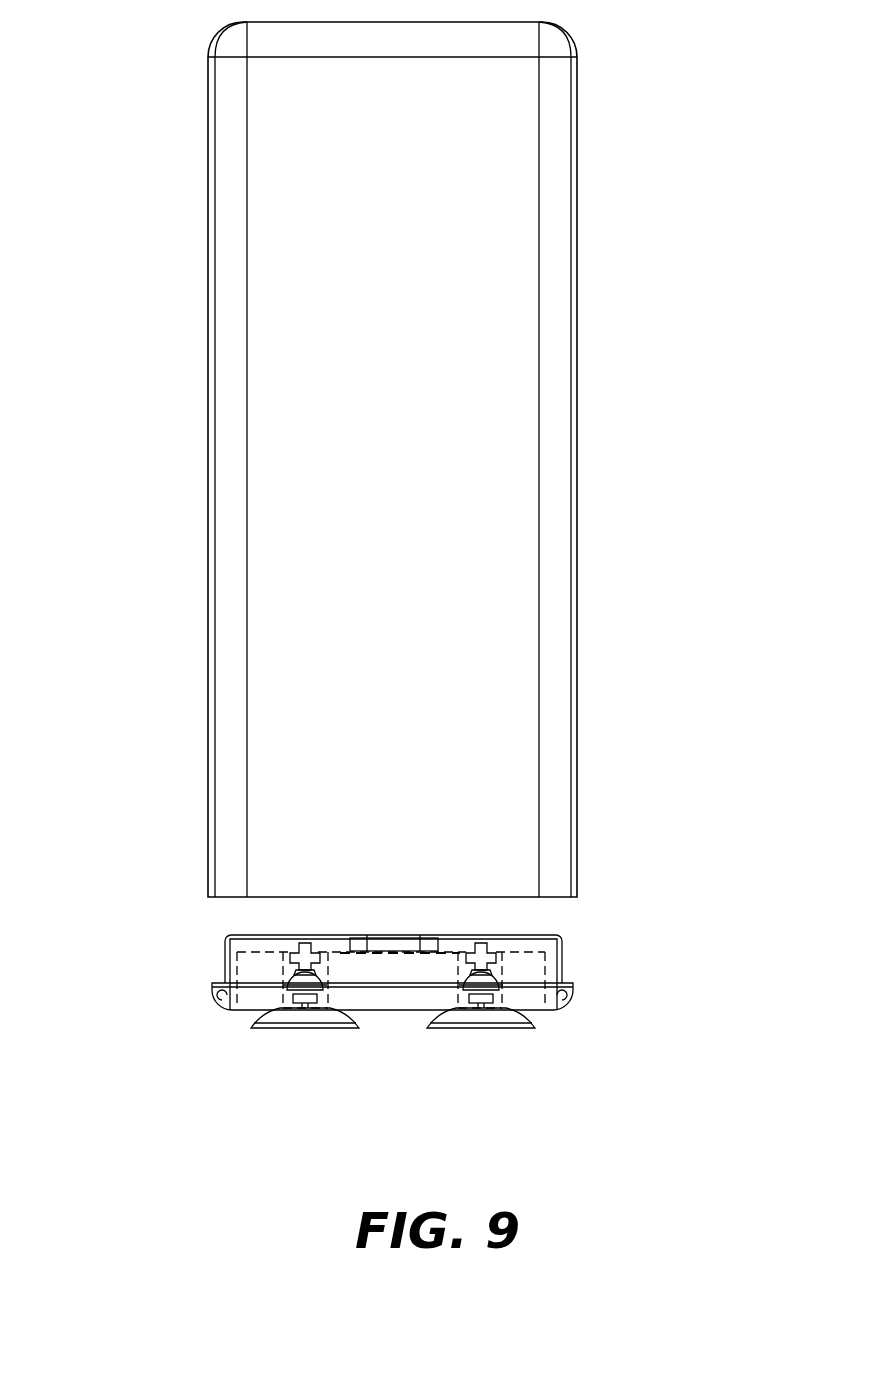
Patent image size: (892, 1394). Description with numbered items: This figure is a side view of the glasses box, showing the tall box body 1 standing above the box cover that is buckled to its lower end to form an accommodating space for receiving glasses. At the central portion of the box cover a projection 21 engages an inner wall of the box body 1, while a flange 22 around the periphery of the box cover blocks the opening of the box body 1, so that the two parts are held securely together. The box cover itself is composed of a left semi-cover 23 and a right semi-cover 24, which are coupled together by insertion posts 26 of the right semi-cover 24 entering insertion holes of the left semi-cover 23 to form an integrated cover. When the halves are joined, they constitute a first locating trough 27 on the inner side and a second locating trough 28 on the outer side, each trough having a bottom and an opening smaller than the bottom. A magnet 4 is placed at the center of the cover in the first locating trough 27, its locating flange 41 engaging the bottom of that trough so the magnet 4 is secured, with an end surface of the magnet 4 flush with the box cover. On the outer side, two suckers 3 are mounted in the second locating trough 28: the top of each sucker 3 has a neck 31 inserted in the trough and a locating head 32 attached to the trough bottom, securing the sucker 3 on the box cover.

The box body 1 is at (503, 670).
The projection 21 is at (530, 940).
The flange 22 is at (573, 1007).
The left semi-cover 23 is at (225, 955).
The right semi-cover 24 is at (562, 957).
The insertion posts 26 is at (490, 960).
The first locating trough 27 is at (365, 938).
The second locating trough 28 is at (493, 983).
The sucker 3 is at (307, 1018).
The neck 31 is at (285, 1013).
The locating head 32 is at (292, 988).
The magnet 4 is at (393, 938).
The locating flange 41 is at (422, 947).